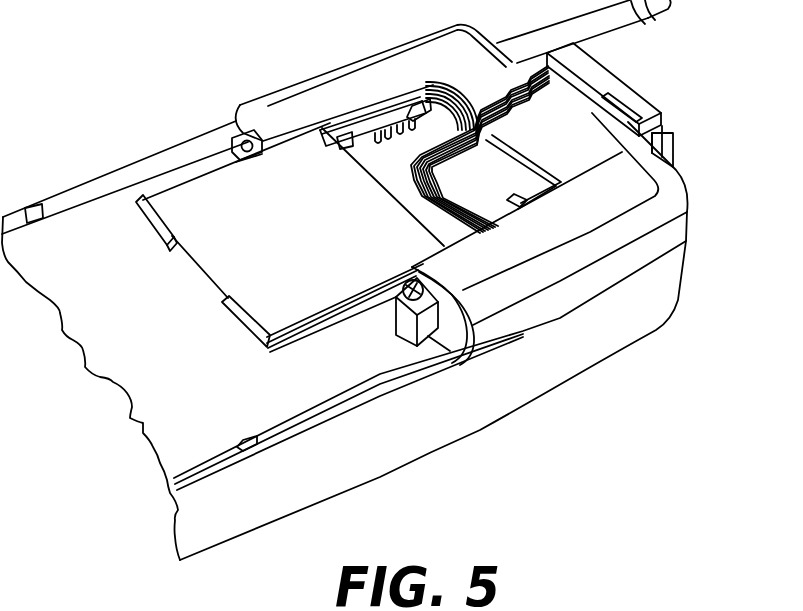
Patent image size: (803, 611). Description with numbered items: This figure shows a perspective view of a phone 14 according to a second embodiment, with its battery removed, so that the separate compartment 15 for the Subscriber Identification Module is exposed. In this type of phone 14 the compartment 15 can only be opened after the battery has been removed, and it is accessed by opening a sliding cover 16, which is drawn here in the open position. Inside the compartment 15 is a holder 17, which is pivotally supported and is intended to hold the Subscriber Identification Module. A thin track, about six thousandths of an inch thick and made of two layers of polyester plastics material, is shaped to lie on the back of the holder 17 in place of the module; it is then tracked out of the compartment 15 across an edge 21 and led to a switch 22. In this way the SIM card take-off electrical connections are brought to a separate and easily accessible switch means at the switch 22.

The phone 14 is at (640, 311).
The compartment 15 is at (422, 86).
The sliding cover 16 is at (222, 184).
The holder 17 is at (431, 204).
The edge 21 is at (498, 138).
The switch 22 is at (644, 107).